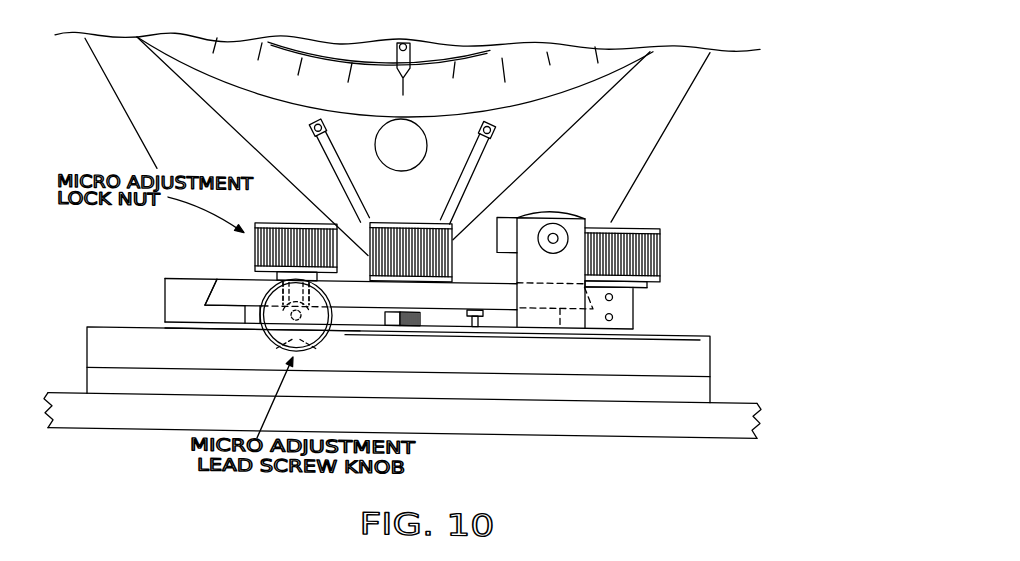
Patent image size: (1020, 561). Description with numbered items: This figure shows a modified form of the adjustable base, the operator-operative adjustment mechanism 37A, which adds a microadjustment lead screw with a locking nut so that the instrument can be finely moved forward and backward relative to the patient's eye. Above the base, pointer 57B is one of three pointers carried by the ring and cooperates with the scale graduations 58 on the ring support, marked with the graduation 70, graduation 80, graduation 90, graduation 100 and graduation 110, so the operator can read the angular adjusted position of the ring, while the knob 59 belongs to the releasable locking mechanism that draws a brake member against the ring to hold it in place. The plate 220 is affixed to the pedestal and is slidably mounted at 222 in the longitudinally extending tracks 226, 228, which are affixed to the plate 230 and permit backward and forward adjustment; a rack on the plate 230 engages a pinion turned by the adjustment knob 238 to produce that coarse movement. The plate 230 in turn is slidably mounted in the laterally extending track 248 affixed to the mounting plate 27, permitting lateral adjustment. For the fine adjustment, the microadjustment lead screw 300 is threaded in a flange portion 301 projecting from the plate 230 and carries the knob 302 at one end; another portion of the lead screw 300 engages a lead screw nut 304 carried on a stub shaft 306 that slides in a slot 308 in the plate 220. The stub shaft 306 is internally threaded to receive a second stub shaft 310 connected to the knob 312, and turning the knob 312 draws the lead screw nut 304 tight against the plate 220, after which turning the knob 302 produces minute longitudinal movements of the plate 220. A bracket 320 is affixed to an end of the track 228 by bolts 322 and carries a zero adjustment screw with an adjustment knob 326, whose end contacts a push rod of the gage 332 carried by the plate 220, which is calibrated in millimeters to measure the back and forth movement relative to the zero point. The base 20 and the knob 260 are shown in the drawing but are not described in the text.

The base 20 is at (467, 416).
The mounting plate 27 is at (563, 382).
The adjustment mechanism 37A is at (700, 308).
The pointer 57B is at (408, 42).
The scale graduations 58 is at (253, 91).
The knob 59 is at (423, 131).
The scale graduation 70 is at (212, 55).
The scale graduation 80 is at (281, 73).
The scale graduation 90 is at (401, 86).
The scale graduation 100 is at (522, 79).
The scale graduation 110 is at (598, 64).
The plate 220 is at (468, 280).
The slidable mounting 222 is at (208, 292).
The track 226 is at (165, 292).
The track 228 is at (628, 296).
The plate 230 is at (442, 315).
The adjustment knob 238 is at (407, 217).
The track 248 is at (710, 345).
The clamp knob 260 is at (637, 218).
The microadjustment lead screw 300 is at (327, 332).
The flange portion 301 is at (275, 336).
The knob 302 is at (318, 340).
The lead screw nut 304 is at (247, 326).
The stub shaft 306 is at (231, 292).
The slot 308 is at (322, 282).
The stub shaft 310 is at (330, 313).
The knob 312 is at (287, 219).
The bracket 320 is at (575, 222).
The bolts 322 is at (612, 291).
The adjustment knob 326 is at (553, 215).
The gage 332 is at (568, 205).